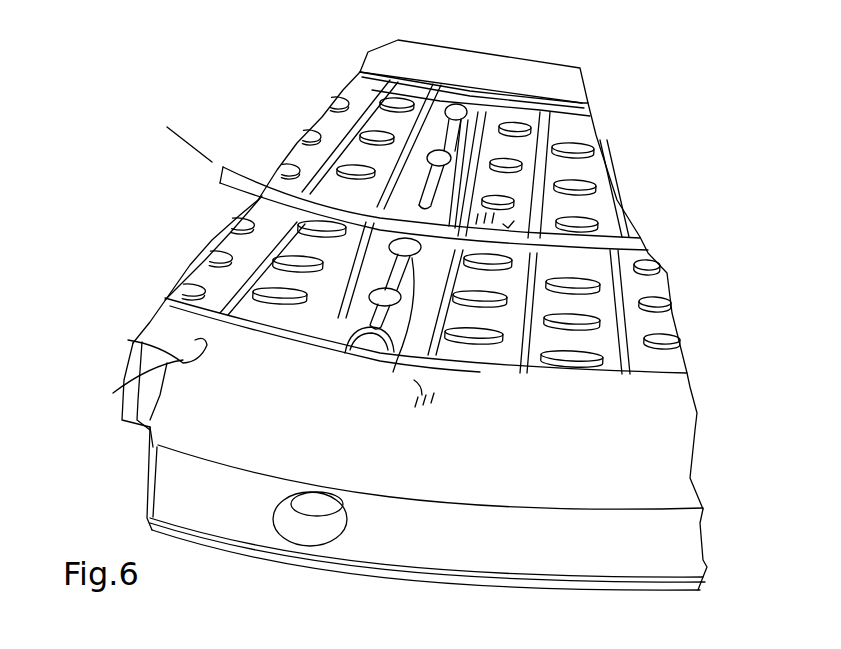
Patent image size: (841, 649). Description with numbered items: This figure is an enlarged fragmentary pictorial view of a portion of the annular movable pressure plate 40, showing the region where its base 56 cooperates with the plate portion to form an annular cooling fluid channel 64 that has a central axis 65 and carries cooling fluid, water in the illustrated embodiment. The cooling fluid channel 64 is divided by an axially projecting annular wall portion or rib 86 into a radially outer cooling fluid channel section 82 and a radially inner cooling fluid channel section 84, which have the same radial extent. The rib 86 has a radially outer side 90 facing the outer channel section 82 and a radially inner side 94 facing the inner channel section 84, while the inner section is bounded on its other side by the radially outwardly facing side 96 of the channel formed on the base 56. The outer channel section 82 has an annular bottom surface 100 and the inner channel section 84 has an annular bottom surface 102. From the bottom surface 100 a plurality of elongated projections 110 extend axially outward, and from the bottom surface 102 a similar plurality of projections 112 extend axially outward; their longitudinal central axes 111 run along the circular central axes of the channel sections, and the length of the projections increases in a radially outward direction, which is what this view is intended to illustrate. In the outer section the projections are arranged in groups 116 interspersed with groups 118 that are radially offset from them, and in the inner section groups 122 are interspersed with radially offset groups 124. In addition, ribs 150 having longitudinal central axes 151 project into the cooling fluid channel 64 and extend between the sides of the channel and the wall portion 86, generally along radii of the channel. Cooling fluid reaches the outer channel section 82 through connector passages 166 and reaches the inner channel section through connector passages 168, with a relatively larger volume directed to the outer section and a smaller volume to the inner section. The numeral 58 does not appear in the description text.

The annular movable pressure plate 40 is at (635, 597).
The base 56 is at (173, 330).
The aperture 58 is at (303, 525).
The cooling fluid channel 64 is at (297, 200).
The central axis 65 is at (192, 118).
The radially outer cooling fluid channel section 82 is at (288, 242).
The radially inner cooling fluid channel section 84 is at (322, 114).
The annular wall portion or rib 86 is at (277, 188).
The radially outer side 90 is at (650, 252).
The radially inner side 94 is at (627, 237).
The radially outwardly facing side 96 is at (378, 128).
The bottom surface 100 is at (538, 343).
The bottom surface 102 is at (577, 130).
The projections 110 is at (590, 352).
The longitudinal central axes 111 is at (425, 401).
The projections 112 is at (358, 186).
The groups of projections 116 is at (564, 386).
The groups of projections 118 is at (273, 313).
The groups of projections 122 is at (590, 127).
The groups of projections 124 is at (400, 76).
The ribs 150 is at (275, 209).
The longitudinal central axes 151 is at (127, 387).
The connector passages 166 is at (372, 382).
The connector passages 168 is at (515, 160).